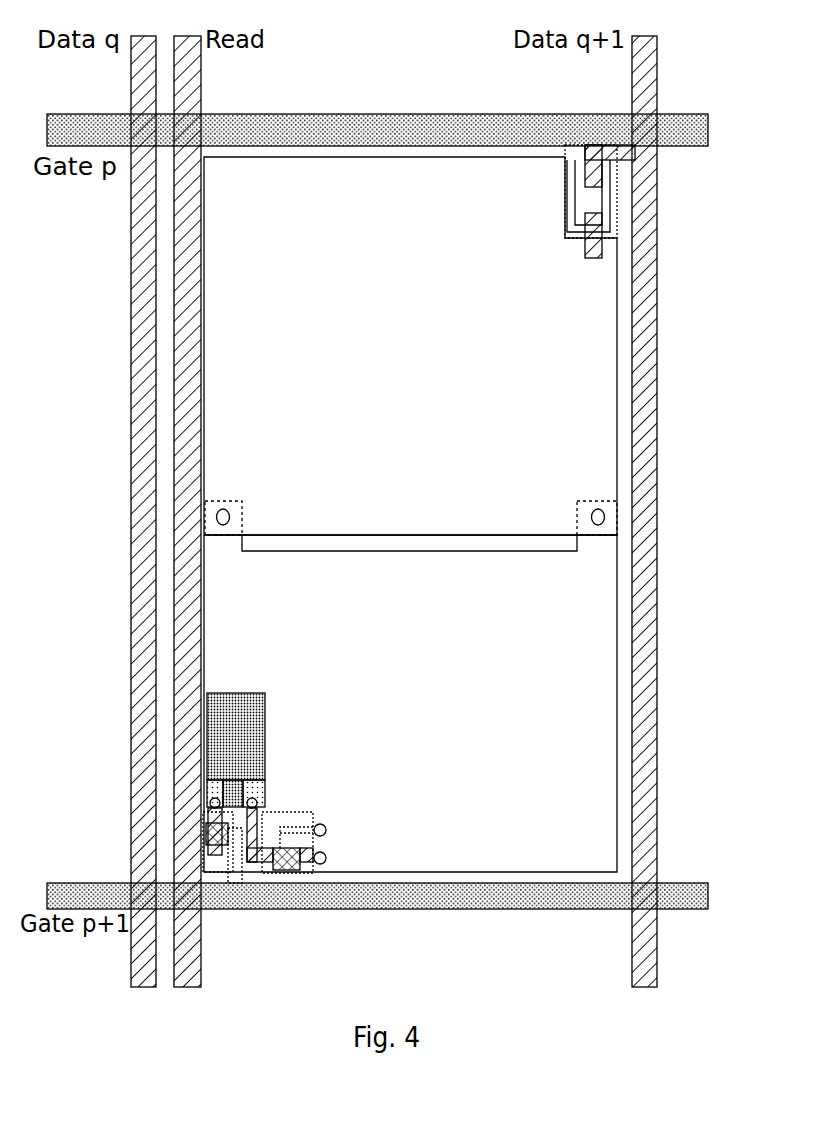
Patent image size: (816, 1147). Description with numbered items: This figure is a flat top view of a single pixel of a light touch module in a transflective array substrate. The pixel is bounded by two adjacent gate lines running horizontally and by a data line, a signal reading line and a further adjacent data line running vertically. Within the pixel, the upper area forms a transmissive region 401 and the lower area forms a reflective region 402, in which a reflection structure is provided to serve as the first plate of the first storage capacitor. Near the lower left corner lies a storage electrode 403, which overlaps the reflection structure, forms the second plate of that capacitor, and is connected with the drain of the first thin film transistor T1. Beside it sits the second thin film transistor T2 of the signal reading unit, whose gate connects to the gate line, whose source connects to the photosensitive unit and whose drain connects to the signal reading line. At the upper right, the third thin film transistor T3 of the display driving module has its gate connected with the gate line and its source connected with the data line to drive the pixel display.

The transmissive region 401 is at (557, 366).
The reflective region 402 is at (552, 686).
The storage electrode 403 is at (252, 750).
The first thin film transistor T1 is at (285, 873).
The second thin film transistor T2 is at (220, 855).
The third thin film transistor T3 is at (605, 237).